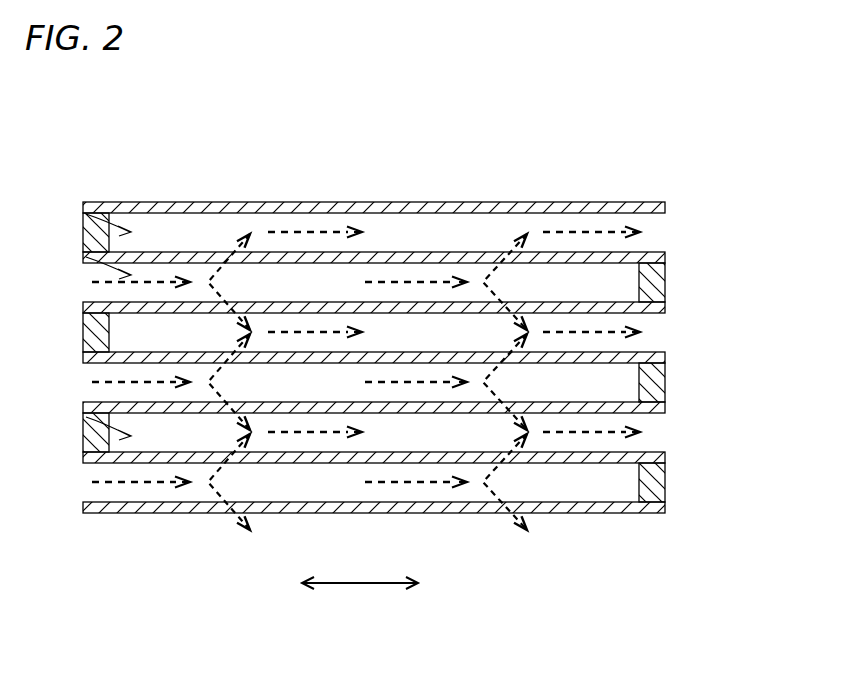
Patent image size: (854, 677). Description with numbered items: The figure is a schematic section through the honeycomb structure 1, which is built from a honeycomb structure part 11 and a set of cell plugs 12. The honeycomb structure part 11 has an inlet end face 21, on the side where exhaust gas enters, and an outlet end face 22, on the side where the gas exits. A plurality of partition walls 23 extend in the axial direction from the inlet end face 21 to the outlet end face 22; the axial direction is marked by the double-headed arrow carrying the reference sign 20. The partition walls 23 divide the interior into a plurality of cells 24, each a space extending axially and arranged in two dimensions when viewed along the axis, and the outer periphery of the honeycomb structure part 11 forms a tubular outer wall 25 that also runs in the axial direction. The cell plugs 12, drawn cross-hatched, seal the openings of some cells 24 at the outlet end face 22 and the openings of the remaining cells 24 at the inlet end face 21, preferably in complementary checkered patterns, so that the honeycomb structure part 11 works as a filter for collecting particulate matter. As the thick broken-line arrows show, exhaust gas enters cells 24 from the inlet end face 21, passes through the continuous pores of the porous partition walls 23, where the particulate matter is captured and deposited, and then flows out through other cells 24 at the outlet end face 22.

The honeycomb structure 1 is at (227, 137).
The honeycomb structure part 11 is at (590, 186).
The cell plug 12 is at (95, 337).
The axial direction arrow 20 is at (376, 586).
The inlet end face 21 is at (58, 492).
The outlet end face 22 is at (690, 466).
The partition wall 23 is at (327, 254).
The cell 24 is at (84, 213).
The tubular outer wall 25 is at (436, 206).